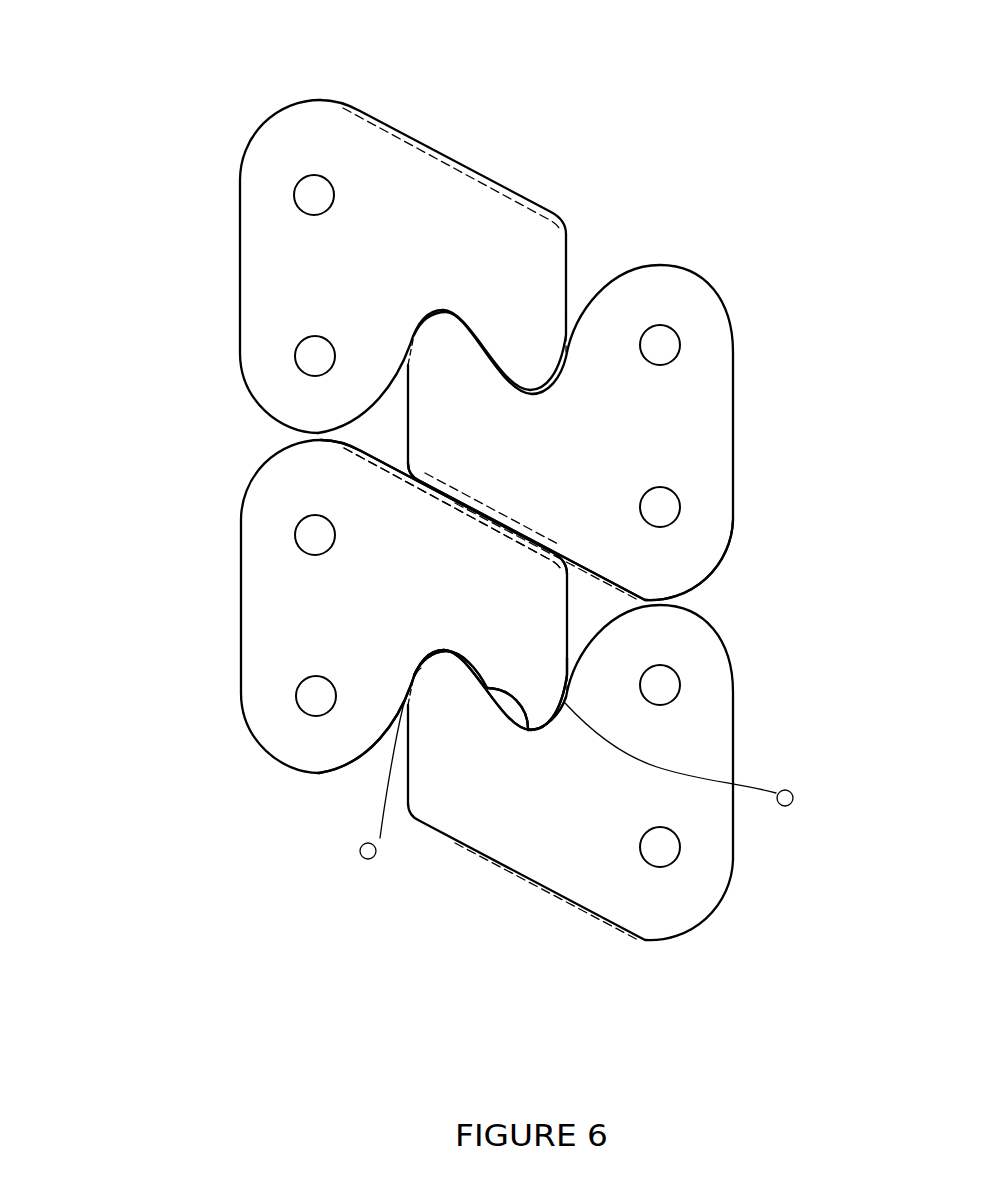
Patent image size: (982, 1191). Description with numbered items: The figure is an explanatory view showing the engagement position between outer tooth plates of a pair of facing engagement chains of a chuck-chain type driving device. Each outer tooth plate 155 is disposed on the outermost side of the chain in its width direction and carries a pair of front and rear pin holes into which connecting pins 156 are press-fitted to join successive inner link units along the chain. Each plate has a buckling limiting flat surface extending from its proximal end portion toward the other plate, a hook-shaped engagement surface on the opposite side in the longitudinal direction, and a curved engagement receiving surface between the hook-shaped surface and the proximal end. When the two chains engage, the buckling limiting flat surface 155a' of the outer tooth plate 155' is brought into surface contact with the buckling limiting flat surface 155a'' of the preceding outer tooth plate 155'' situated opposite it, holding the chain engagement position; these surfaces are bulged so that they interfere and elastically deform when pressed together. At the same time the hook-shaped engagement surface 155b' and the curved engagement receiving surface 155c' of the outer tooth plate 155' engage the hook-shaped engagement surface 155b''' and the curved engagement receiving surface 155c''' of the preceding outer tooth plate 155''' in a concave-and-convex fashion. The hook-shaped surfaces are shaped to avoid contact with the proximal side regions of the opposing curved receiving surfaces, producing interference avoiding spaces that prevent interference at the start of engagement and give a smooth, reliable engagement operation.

The outer tooth plate 155 is at (342, 246).
The outer tooth plate 155' is at (302, 606).
The preceding outer tooth plate 155'' is at (661, 433).
The preceding outer tooth plate 155''' is at (632, 794).
The buckling limiting flat surface 155a' is at (312, 477).
The buckling limiting flat surface 155a'' is at (664, 572).
The hook-shaped engagement surface 155b' is at (465, 810).
The curved engagement receiving surface 155c' is at (269, 739).
The hook-shaped engagement surface 155b''' is at (336, 778).
The curved engagement receiving surface 155c''' is at (572, 863).
The connecting pin 156 is at (300, 196).